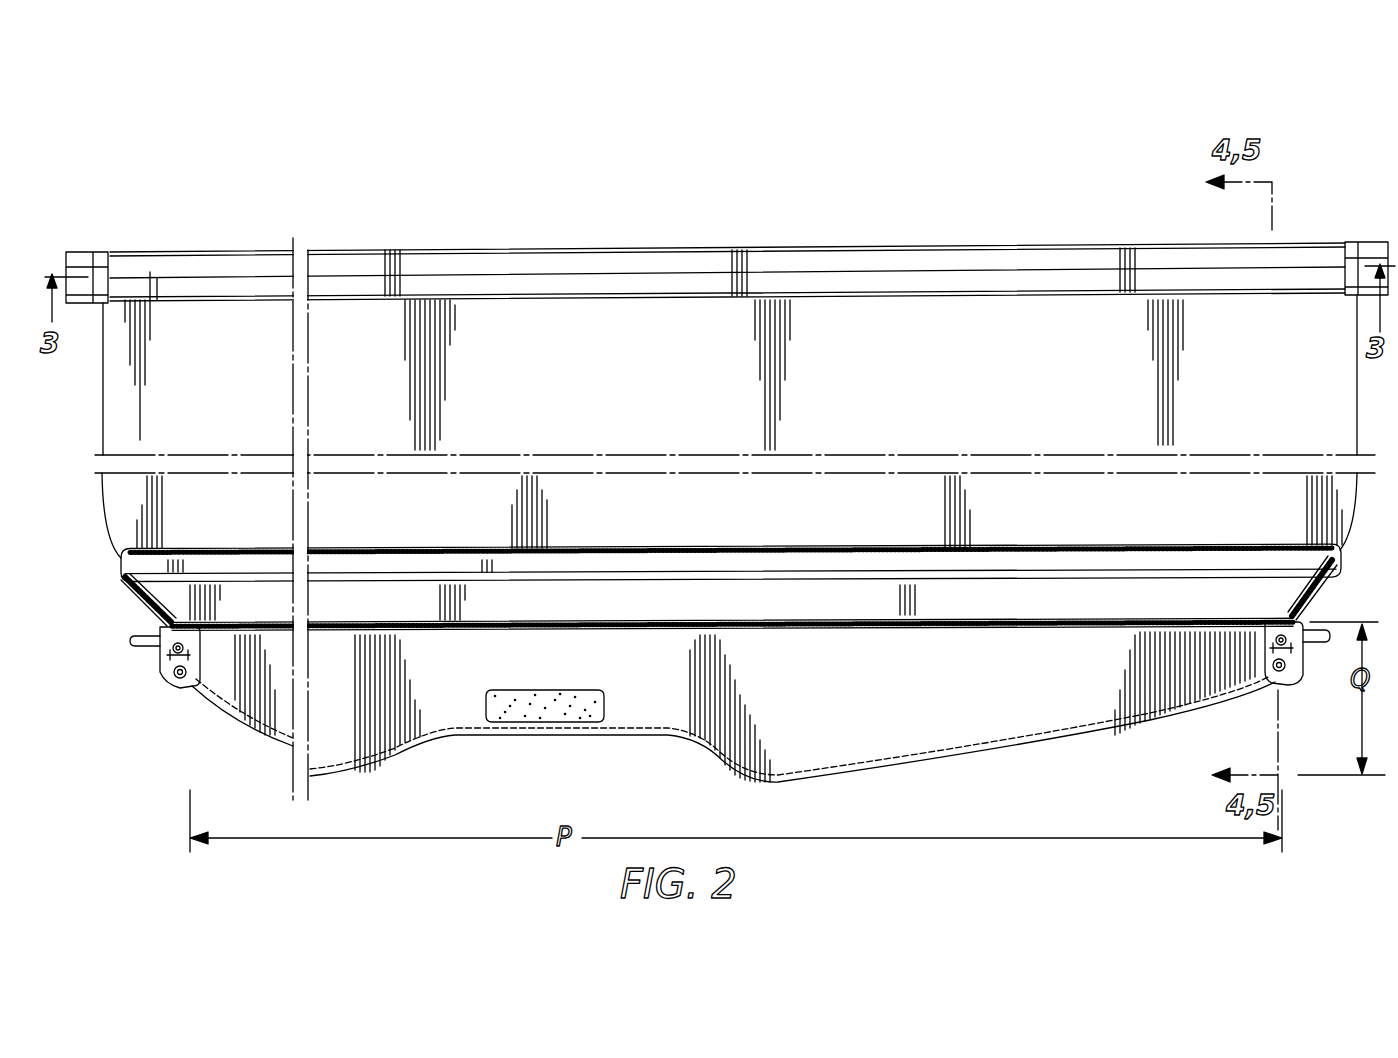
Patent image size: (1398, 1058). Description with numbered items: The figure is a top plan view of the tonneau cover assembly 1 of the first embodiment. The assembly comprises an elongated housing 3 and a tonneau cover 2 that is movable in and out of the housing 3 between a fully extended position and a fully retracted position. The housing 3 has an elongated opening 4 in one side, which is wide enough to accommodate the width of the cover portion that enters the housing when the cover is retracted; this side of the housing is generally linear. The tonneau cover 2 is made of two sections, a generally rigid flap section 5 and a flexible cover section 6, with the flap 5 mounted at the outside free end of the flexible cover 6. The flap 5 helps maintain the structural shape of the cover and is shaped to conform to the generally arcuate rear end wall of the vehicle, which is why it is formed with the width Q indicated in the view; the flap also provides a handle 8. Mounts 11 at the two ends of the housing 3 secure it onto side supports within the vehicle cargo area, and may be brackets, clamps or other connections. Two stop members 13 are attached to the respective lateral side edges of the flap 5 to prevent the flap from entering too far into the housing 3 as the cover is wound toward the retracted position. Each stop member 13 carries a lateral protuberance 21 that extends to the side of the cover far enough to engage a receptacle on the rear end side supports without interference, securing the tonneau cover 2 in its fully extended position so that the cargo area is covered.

The tonneau cover assembly 1 is at (622, 222).
The tonneau cover 2 is at (392, 491).
The housing 3 is at (834, 275).
The elongated opening 4 is at (988, 304).
The flap section 5 is at (930, 702).
The flexible cover section 6 is at (986, 379).
The handle 8 is at (538, 710).
The mounts 11 is at (88, 262).
The stop members 13 is at (169, 690).
The lateral protuberance 21 is at (155, 643).